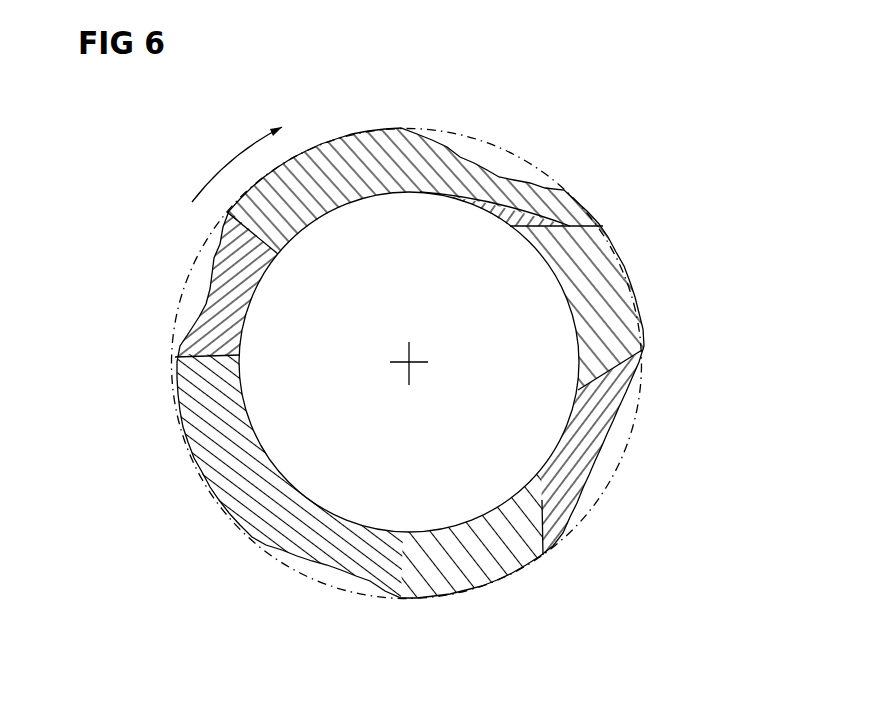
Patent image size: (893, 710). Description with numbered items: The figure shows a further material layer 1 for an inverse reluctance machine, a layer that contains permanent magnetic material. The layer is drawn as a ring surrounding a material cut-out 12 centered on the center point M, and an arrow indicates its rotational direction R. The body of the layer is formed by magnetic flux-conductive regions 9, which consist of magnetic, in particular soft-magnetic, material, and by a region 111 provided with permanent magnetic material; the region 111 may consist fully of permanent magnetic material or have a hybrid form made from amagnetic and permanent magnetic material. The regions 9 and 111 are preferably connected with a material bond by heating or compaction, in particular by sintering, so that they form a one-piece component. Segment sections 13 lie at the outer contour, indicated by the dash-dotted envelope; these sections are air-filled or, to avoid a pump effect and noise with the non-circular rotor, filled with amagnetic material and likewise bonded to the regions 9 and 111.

The material layer 1 is at (437, 342).
The magnetic flux-conductive region 9 is at (570, 223).
The region provided with permanent magnetic material 111 is at (608, 262).
The material cut-out 12 is at (448, 462).
The segment section 13 is at (620, 447).
The center point M is at (409, 362).
The rotational direction R is at (227, 162).